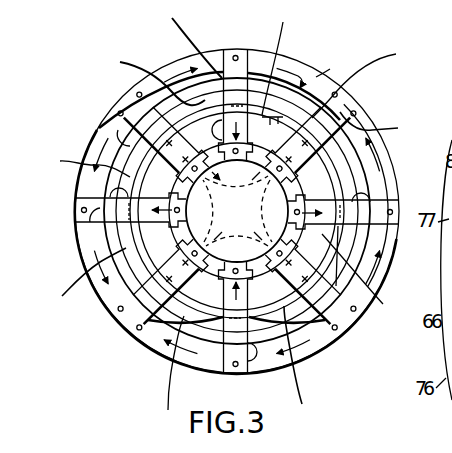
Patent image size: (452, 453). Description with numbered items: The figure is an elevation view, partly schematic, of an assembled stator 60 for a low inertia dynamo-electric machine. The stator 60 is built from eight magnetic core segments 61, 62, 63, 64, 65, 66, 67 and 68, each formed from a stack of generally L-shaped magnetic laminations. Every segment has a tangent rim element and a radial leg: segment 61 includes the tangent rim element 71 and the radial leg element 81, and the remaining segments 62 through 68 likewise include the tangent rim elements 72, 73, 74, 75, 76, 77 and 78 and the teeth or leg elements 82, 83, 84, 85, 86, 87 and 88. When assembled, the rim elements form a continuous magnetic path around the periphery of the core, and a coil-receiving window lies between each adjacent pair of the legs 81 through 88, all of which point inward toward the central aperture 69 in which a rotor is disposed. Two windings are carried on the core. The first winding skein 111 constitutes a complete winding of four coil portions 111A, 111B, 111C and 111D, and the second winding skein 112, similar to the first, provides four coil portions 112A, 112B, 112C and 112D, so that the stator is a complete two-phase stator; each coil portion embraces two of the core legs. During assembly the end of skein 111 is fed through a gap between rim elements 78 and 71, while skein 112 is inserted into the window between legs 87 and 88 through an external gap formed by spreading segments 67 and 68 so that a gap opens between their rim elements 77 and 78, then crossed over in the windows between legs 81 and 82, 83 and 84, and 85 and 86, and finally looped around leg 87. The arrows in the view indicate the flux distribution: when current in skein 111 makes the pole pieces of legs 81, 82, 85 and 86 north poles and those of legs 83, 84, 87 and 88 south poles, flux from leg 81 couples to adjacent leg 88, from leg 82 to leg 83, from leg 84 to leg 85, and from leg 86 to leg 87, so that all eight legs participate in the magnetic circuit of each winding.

The stator 60 is at (328, 66).
The magnetic core segment 61 is at (222, 50).
The magnetic core segment 62 is at (335, 92).
The magnetic core segment 63 is at (392, 203).
The magnetic core segment 64 is at (355, 320).
The magnetic core segment 65 is at (246, 372).
The magnetic core segment 66 is at (137, 332).
The magnetic core segment 67 is at (88, 253).
The magnetic core segment 68 is at (98, 138).
The central aperture 69 is at (237, 211).
The tangent rim element 71 is at (180, 58).
The tangent rim element 72 is at (288, 62).
The tangent rim element 73 is at (378, 152).
The tangent rim element 74 is at (390, 272).
The tangent rim element 75 is at (318, 348).
The tangent rim element 76 is at (190, 358).
The tangent rim element 77 is at (103, 302).
The tangent rim element 78 is at (75, 184).
The radial leg element 81 is at (248, 50).
The leg element 82 is at (358, 124).
The leg element 83 is at (374, 232).
The leg element 84 is at (306, 335).
The leg element 85 is at (208, 372).
The leg element 86 is at (166, 345).
The leg element 87 is at (86, 232).
The leg element 88 is at (128, 134).
The first winding skein 111 is at (278, 62).
The coil portion 111A is at (370, 79).
The coil portion 111B is at (367, 274).
The coil portion 111C is at (166, 373).
The coil portion 111D is at (79, 163).
The second winding skein 112 is at (186, 39).
The coil portion 112A is at (141, 76).
The coil portion 112B is at (389, 124).
The coil portion 112C is at (312, 366).
The coil portion 112D is at (76, 285).